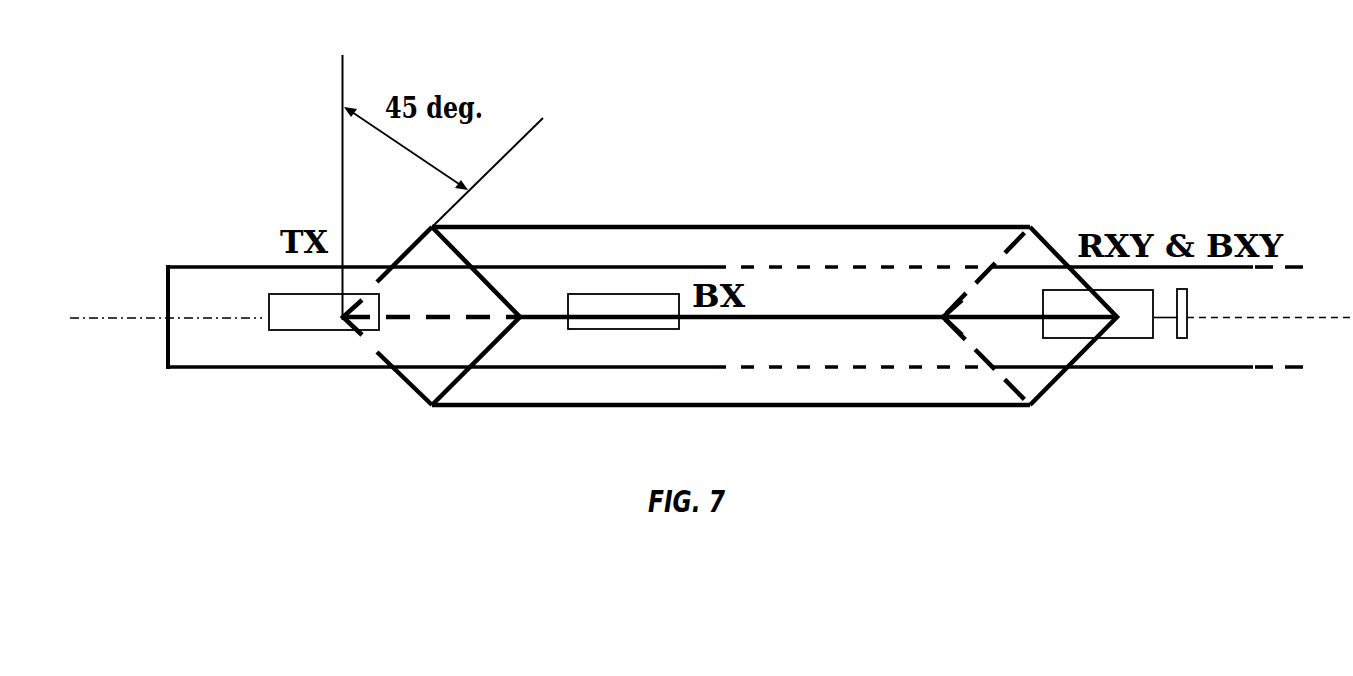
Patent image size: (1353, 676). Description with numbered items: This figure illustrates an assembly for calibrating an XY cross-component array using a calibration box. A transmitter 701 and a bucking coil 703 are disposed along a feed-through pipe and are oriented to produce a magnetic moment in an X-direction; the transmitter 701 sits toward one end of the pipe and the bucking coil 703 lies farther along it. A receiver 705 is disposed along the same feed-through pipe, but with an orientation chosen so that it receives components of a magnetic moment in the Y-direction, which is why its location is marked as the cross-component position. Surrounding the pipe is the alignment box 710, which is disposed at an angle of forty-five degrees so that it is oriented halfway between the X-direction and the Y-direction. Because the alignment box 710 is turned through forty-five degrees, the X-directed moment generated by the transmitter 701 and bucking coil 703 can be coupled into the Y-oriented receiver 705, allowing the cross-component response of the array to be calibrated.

The transmitter 701 is at (286, 322).
The bucking coil 703 is at (628, 294).
The receiver 705 is at (1122, 338).
The alignment box 710 is at (828, 228).